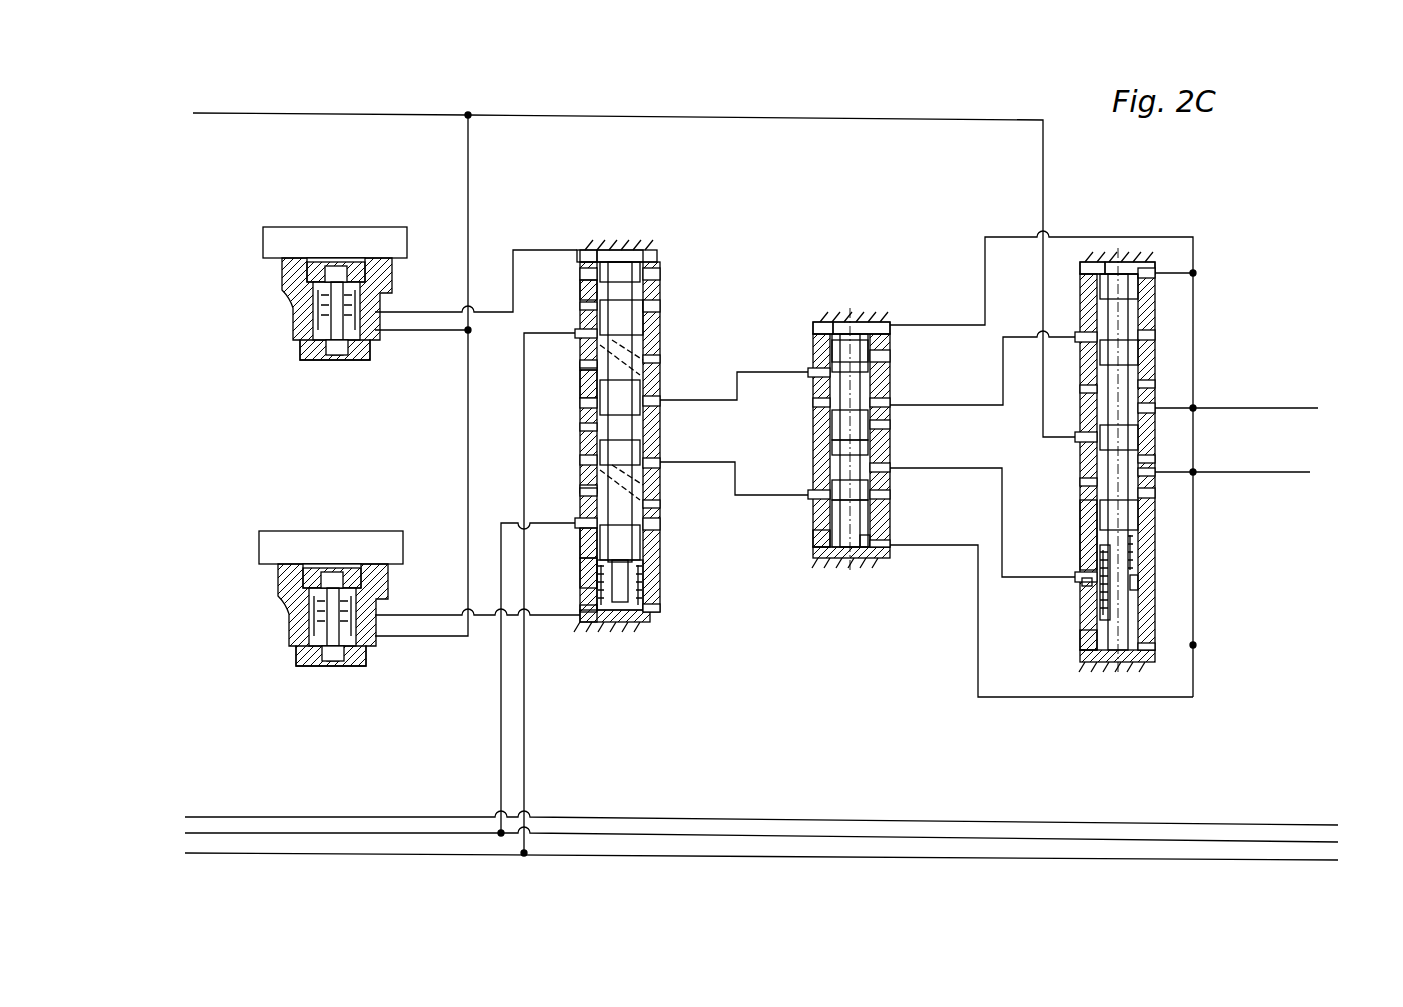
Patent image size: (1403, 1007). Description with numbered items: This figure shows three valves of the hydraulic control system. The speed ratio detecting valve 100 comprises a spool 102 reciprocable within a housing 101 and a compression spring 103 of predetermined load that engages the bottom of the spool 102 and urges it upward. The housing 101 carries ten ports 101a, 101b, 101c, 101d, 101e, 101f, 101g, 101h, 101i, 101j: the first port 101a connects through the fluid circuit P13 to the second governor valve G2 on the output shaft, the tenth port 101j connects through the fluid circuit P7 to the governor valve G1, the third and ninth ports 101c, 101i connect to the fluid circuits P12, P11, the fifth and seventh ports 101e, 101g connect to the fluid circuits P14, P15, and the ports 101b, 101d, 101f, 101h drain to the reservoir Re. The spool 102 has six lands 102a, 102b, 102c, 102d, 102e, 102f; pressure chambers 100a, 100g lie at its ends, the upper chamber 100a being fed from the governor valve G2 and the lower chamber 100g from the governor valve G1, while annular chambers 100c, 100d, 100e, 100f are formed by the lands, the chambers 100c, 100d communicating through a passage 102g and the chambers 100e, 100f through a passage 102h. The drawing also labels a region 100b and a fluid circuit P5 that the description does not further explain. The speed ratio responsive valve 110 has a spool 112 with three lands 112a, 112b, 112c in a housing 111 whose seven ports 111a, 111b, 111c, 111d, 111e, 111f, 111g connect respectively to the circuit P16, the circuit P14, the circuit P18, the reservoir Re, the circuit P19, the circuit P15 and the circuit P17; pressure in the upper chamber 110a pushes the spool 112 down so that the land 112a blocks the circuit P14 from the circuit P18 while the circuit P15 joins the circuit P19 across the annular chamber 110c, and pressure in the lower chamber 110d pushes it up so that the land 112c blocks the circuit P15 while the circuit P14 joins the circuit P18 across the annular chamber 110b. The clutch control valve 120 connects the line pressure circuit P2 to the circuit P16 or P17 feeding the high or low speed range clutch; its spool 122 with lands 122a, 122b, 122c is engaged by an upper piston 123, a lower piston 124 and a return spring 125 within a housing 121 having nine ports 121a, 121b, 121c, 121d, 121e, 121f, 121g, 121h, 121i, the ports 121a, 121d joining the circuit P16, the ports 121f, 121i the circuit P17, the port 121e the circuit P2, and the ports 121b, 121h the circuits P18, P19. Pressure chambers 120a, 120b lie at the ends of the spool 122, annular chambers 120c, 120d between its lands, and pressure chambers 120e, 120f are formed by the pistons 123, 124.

The speed ratio detecting valve 100 is at (613, 230).
The pressure chamber 100a is at (636, 252).
The port 100b is at (652, 285).
The annular chamber 100c is at (656, 312).
The annular chamber 100d is at (652, 398).
The annular chamber 100e is at (652, 462).
The annular chamber 100f is at (650, 525).
The pressure chamber 100g is at (652, 610).
The housing 101 is at (638, 542).
The first port 101a is at (585, 250).
The second port 101b is at (590, 300).
The third port 101c is at (590, 340).
The fourth port 101d is at (590, 376).
The fifth port 101e is at (648, 404).
The sixth port 101f is at (590, 442).
The seventh port 101g is at (648, 468).
The eighth port 101h is at (590, 503).
The ninth port 101i is at (590, 530).
The tenth port 101j is at (592, 624).
The spool 102 is at (638, 568).
The first land 102a is at (590, 280).
The second land 102b is at (648, 350).
The third land 102c is at (590, 360).
The fourth land 102d is at (590, 410).
The fifth land 102e is at (593, 484).
The sixth land 102f is at (595, 550).
The passage 102g is at (648, 365).
The passage 102h is at (648, 503).
The compression spring 103 is at (636, 624).
The speed ratio responsive valve 110 is at (855, 295).
The upper pressure chamber 110a is at (830, 322).
The annular chamber 110b is at (820, 402).
The annular chamber 110c is at (820, 493).
The lower pressure chamber 110d is at (828, 562).
The housing 111 is at (818, 342).
The first port 111a is at (876, 322).
The second port 111b is at (818, 380).
The third port 111c is at (880, 402).
The fourth port 111d is at (815, 447).
The fifth port 111e is at (878, 472).
The sixth port 111f is at (820, 505).
The seventh port 111g is at (878, 558).
The spool 112 is at (872, 500).
The first land 112a is at (878, 364).
The second land 112b is at (878, 424).
The third land 112c is at (876, 518).
The clutch control valve 120 is at (1122, 255).
The pressure chamber 120a is at (1140, 335).
The pressure chamber 120b is at (1140, 580).
The annular chamber 120c is at (1150, 384).
The annular chamber 120d is at (1146, 459).
The pressure chamber 120e is at (1098, 262).
The pressure chamber 120f is at (1112, 652).
The housing 121 is at (1082, 532).
The first port 121a is at (1140, 262).
The second port 121b is at (1086, 338).
The third port 121c is at (1086, 391).
The fourth port 121d is at (1152, 408).
The fifth port 121e is at (1086, 441).
The sixth port 121f is at (1150, 476).
The seventh port 121g is at (1083, 484).
The eighth port 121h is at (1080, 580).
The ninth port 121i is at (1136, 652).
The spool 122 is at (1105, 521).
The first land 122a is at (1140, 357).
The second land 122b is at (1145, 441).
The third land 122c is at (1140, 493).
The piston 123 is at (1138, 298).
The piston 124 is at (1118, 606).
The return spring 125 is at (1086, 586).
The governor valve G1 is at (292, 630).
The second governor valve G2 is at (285, 318).
The fluid circuit P2 is at (344, 118).
The pressure line P5 is at (1189, 822).
The fluid circuit P7 is at (566, 617).
The fluid circuit P11 is at (501, 733).
The fluid circuit P12 is at (524, 728).
The fluid circuit P13 is at (513, 292).
The fluid circuit P14 is at (737, 370).
The fluid circuit P15 is at (735, 500).
The fluid circuit P16 is at (985, 280).
The fluid circuit P17 is at (955, 520).
The fluid circuit P18 is at (965, 392).
The fluid circuit P19 is at (964, 455).
The reservoir Re is at (588, 306).